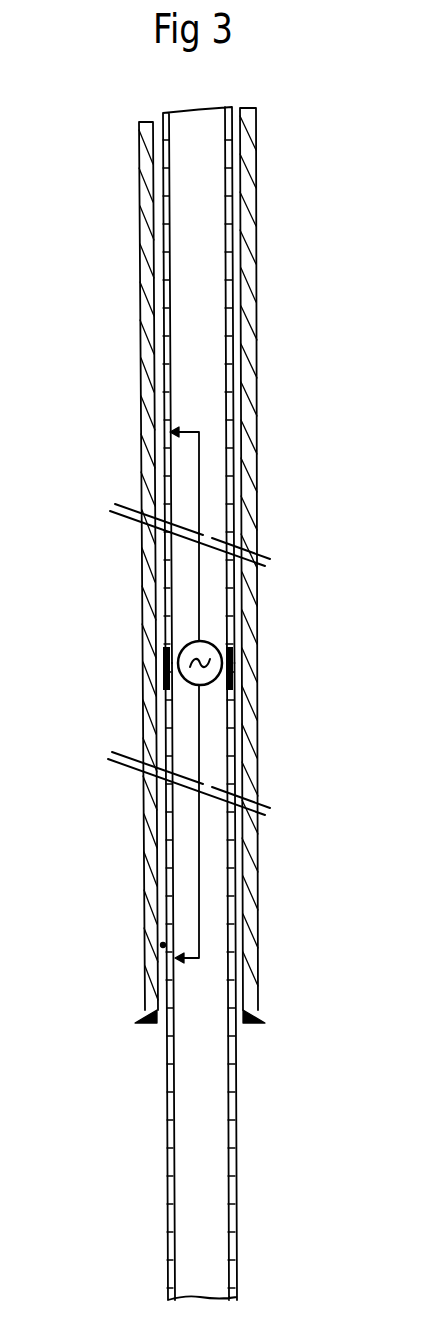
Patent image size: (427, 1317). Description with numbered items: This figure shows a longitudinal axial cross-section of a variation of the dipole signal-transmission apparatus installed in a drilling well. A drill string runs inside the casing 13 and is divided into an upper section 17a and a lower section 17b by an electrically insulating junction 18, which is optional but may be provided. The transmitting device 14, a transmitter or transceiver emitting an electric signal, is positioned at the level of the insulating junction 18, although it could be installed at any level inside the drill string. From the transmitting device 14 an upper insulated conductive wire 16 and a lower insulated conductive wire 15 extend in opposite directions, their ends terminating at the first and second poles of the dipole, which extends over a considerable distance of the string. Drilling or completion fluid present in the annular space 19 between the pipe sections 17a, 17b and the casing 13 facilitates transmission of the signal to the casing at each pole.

The casing 13 is at (245, 249).
The transmitting device 14 is at (187, 653).
The lower insulated conductive wire 15 is at (200, 820).
The upper conductive wire 16 is at (198, 488).
The upper section 17a is at (232, 335).
The lower section 17b is at (233, 893).
The electrically insulating junction 18 is at (233, 655).
The annular space 19 is at (163, 945).